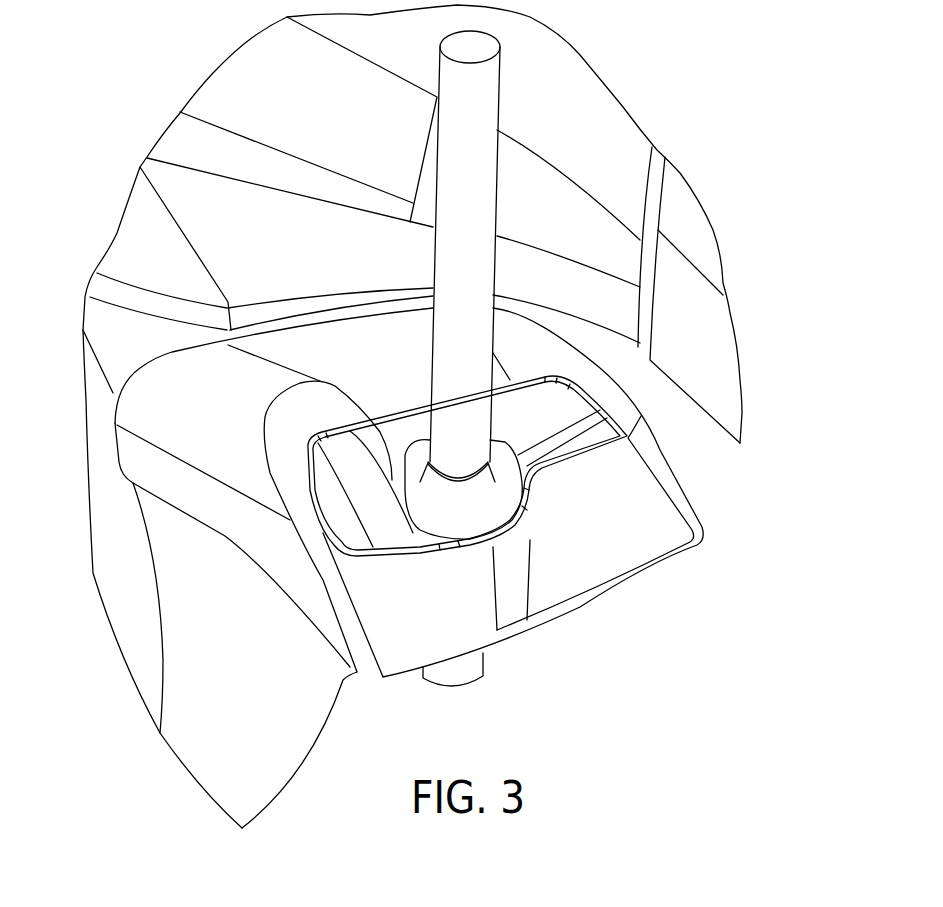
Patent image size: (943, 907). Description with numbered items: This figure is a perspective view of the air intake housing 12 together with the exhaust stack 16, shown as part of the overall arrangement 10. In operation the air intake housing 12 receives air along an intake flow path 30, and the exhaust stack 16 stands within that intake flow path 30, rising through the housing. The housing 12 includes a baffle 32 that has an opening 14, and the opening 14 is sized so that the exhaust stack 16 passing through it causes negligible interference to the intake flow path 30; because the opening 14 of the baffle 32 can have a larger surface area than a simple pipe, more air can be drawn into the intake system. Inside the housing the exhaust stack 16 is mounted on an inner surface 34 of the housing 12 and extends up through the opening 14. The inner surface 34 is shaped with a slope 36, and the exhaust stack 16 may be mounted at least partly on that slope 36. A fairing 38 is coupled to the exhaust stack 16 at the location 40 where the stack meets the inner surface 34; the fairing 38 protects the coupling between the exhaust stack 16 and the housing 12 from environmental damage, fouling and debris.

The seat assembly 10 is at (253, 88).
The air intake housing 12 is at (157, 407).
The opening 14 is at (575, 410).
The exhaust stack 16 is at (470, 163).
The intake flow path 30 is at (380, 506).
The baffle 32 is at (378, 400).
The inner surface 34 is at (347, 463).
The slope 36 is at (397, 480).
The fairing 38 is at (478, 513).
The location 40 is at (557, 462).